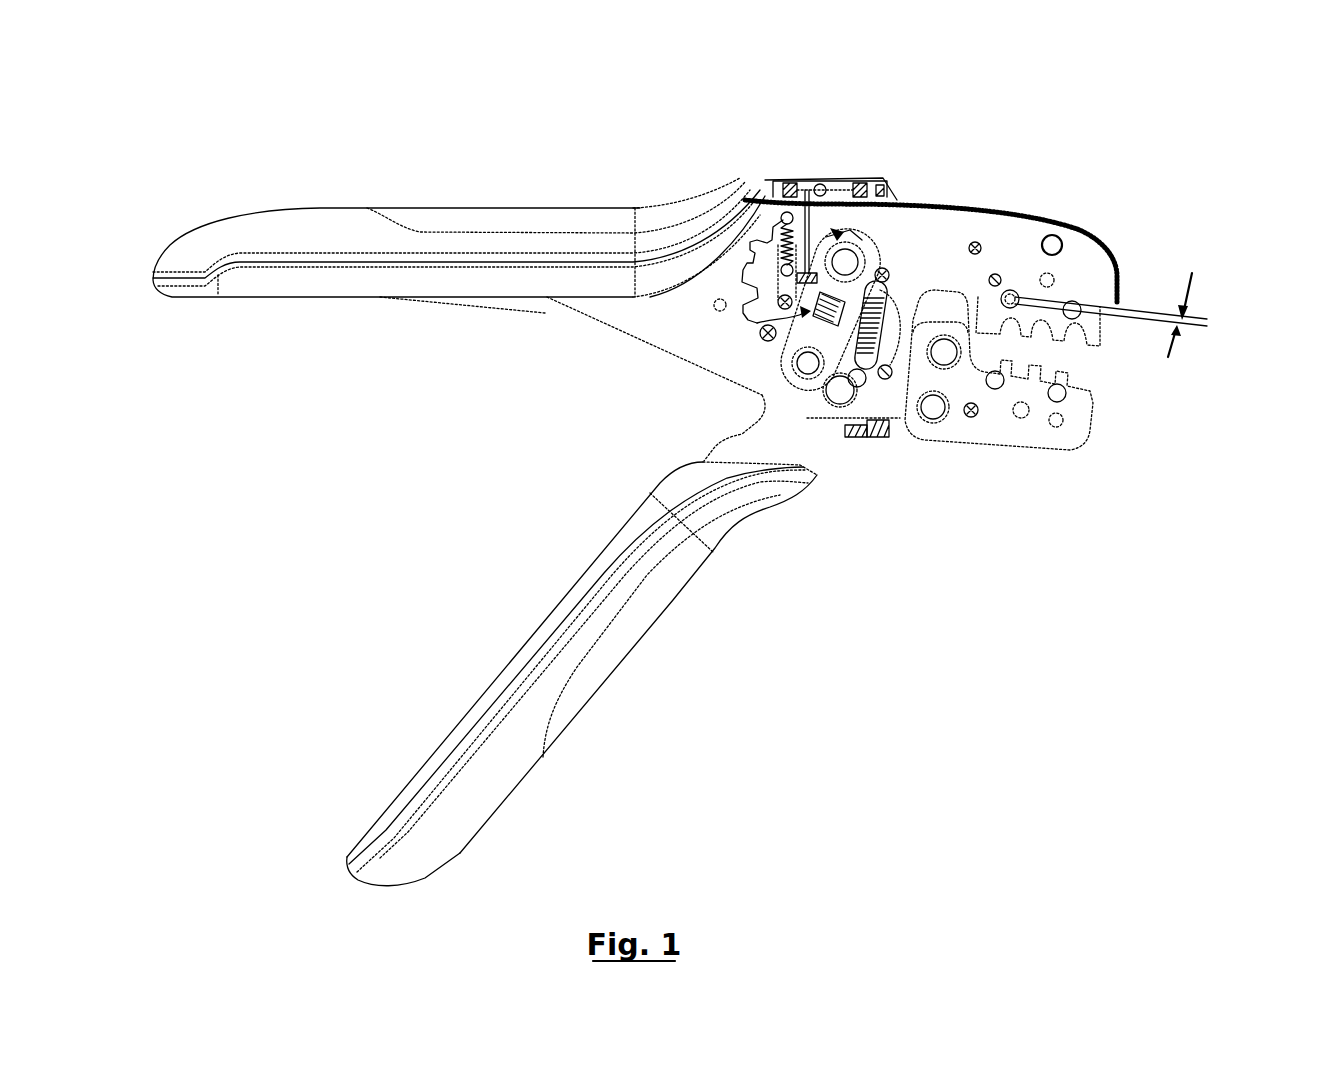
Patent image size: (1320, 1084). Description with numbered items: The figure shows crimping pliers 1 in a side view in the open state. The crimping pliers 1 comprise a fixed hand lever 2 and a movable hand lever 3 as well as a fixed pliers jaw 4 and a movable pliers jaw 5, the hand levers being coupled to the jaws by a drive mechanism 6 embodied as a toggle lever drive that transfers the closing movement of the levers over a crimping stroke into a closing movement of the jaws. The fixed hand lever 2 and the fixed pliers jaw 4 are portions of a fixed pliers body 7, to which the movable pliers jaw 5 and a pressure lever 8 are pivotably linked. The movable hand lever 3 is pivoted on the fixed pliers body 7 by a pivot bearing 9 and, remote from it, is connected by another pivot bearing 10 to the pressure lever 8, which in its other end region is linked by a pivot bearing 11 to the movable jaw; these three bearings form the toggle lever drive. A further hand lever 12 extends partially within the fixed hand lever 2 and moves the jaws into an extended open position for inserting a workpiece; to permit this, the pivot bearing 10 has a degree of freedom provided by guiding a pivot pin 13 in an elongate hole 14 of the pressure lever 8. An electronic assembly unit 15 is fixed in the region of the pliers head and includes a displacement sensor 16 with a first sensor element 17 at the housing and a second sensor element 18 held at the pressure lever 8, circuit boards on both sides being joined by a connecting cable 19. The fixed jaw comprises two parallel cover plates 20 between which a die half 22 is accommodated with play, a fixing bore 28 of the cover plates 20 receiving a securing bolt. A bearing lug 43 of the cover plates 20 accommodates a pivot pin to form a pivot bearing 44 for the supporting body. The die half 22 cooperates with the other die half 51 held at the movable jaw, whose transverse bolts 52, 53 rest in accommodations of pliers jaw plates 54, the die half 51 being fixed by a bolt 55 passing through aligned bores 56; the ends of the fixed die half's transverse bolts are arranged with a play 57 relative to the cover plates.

The crimping pliers 1 is at (573, 110).
The fixed hand lever 2 is at (293, 230).
The movable hand lever 3 is at (503, 770).
The fixed pliers jaw 4 is at (1024, 232).
The movable pliers jaw 5 is at (1013, 433).
The drive mechanism 6 is at (828, 216).
The fixed pliers body 7 is at (929, 232).
The pressure lever 8 is at (887, 281).
The pivot bearing 9 is at (846, 432).
The pivot bearing 10 is at (766, 327).
The pivot bearing 11 is at (847, 263).
The hand lever 12 is at (470, 303).
The pivot pin 13 is at (780, 374).
The elongate hole 14 is at (803, 395).
The electronic assembly unit 15 is at (800, 190).
The displacement sensor 16 is at (742, 318).
The first sensor element 17 is at (882, 291).
The second sensor element 18 is at (805, 366).
The connecting cable 19 is at (760, 210).
The cover plates 20 is at (966, 228).
The die half 22 is at (1090, 330).
The fixing bore 28 is at (1050, 277).
The bearing lug 43 is at (1070, 226).
The pivot bearing 44 is at (1066, 242).
The die half 51 is at (1068, 392).
The transverse bolt 52 is at (998, 383).
The transverse bolt 53 is at (1063, 400).
The pliers jaw plates 54 is at (953, 423).
The bolt 55 is at (1020, 417).
The bores 56 is at (1027, 422).
The play 57 is at (1193, 290).